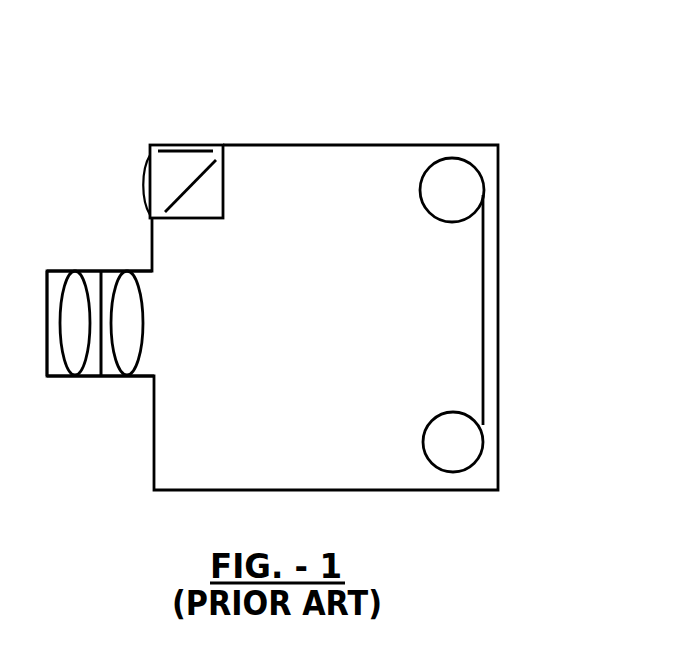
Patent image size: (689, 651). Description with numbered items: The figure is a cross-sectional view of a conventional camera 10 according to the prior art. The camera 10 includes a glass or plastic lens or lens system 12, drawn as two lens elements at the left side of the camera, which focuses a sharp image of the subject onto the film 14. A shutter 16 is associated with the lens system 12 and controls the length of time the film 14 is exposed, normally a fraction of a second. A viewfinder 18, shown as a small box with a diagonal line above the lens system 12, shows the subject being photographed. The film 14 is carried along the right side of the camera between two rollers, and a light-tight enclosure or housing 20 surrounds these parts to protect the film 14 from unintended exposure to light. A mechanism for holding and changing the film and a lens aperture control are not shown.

The camera 10 is at (548, 88).
The lens system 12 is at (128, 376).
The film 14 is at (483, 257).
The shutter 16 is at (96, 282).
The viewfinder 18 is at (168, 145).
The housing 20 is at (292, 146).